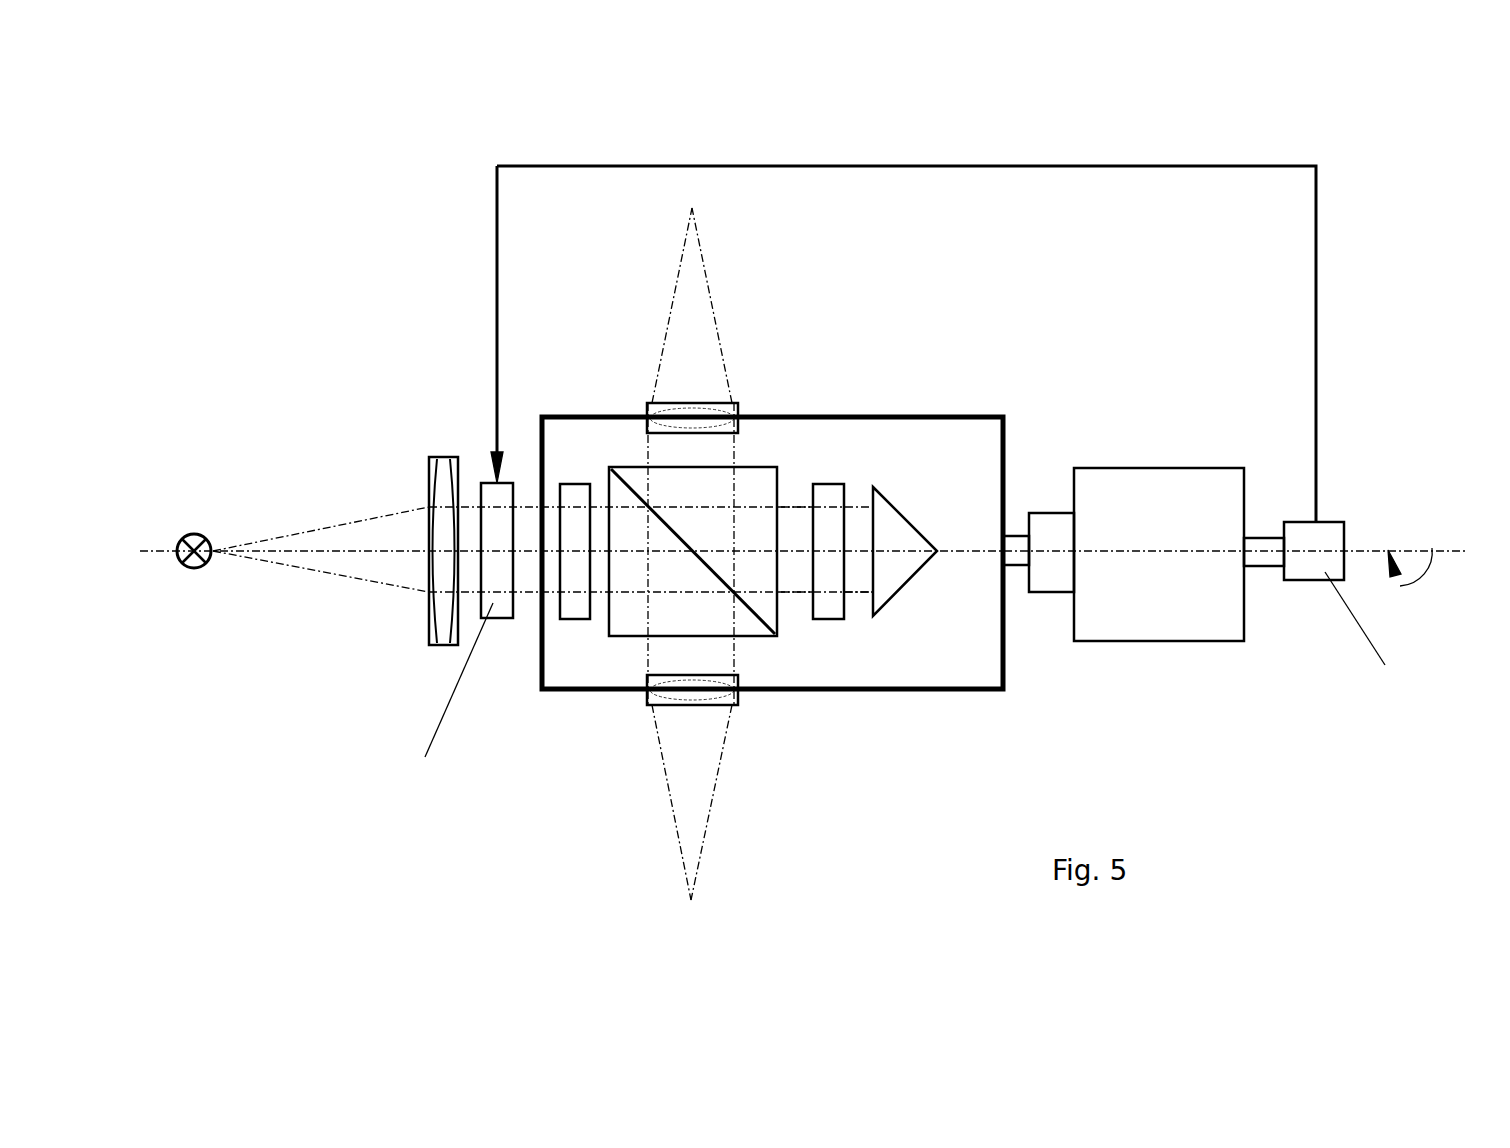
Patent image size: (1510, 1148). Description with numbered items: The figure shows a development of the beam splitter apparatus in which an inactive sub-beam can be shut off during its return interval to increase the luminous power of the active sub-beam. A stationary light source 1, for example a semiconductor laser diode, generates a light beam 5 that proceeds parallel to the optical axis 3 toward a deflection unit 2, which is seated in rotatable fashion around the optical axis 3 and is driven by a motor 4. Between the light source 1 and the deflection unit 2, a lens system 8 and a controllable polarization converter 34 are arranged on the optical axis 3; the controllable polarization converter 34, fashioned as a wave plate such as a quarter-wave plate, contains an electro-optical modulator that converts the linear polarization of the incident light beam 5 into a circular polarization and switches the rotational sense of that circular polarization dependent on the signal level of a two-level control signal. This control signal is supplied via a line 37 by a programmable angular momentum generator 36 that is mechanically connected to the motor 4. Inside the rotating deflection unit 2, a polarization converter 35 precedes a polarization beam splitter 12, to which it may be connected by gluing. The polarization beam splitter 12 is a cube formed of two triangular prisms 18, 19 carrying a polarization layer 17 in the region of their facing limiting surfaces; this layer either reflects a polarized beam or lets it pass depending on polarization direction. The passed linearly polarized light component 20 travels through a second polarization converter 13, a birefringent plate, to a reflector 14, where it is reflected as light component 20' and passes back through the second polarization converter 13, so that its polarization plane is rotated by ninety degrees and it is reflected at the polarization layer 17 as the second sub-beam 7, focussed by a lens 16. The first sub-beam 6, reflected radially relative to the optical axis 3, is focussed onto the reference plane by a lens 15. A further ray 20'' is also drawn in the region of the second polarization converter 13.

The stationary light source 1 is at (188, 530).
The deflection unit 2 is at (1010, 440).
The optical axis 3 is at (292, 540).
The motor 4 is at (1093, 488).
The light beam 5 is at (368, 518).
The first sub-beam 6 is at (690, 755).
The second sub-beam 7 is at (692, 307).
The lens system 8 is at (433, 460).
The polarization beam splitter 12 is at (622, 467).
The second polarization converter 13 is at (823, 490).
The reflector 14 is at (893, 500).
The lens 15 is at (710, 690).
The lens 16 is at (697, 415).
The polarization layer 17 is at (760, 622).
The triangular prism 18 is at (736, 505).
The triangular prism 19 is at (625, 622).
The second linearly polarized light component 20 is at (800, 630).
The reflected light component 20' is at (861, 631).
The ray 20'' is at (808, 468).
The controllable polarization converter 34 is at (491, 485).
The polarization converter 35 is at (577, 620).
The programmable angular momentum generator 36 is at (1345, 520).
The line 37 is at (1320, 260).